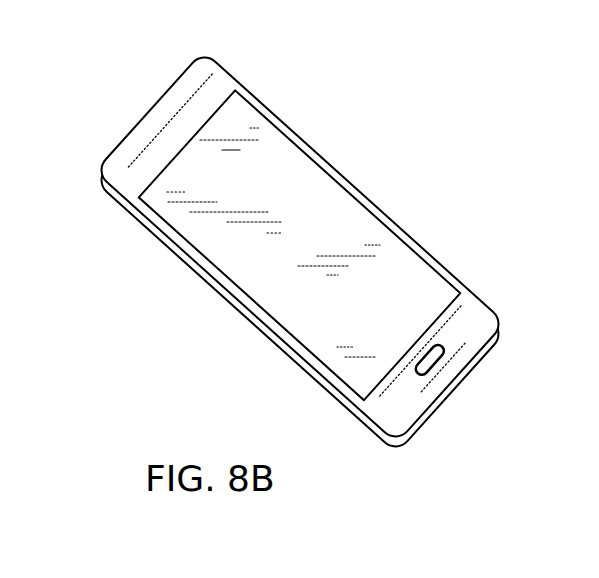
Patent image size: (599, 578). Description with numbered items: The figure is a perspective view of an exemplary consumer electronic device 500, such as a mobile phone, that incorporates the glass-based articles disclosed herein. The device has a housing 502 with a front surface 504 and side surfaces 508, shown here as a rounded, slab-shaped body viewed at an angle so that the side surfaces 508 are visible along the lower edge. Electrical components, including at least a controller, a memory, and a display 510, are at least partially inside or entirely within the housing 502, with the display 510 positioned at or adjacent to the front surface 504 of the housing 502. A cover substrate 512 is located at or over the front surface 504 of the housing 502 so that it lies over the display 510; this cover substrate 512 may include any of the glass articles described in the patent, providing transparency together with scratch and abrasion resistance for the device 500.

The consumer electronic device 500 is at (131, 82).
The housing 502 is at (225, 77).
The front surface 504 is at (475, 318).
The side surfaces 508 is at (170, 247).
The display 510 is at (272, 143).
The cover substrate 512 is at (322, 323).